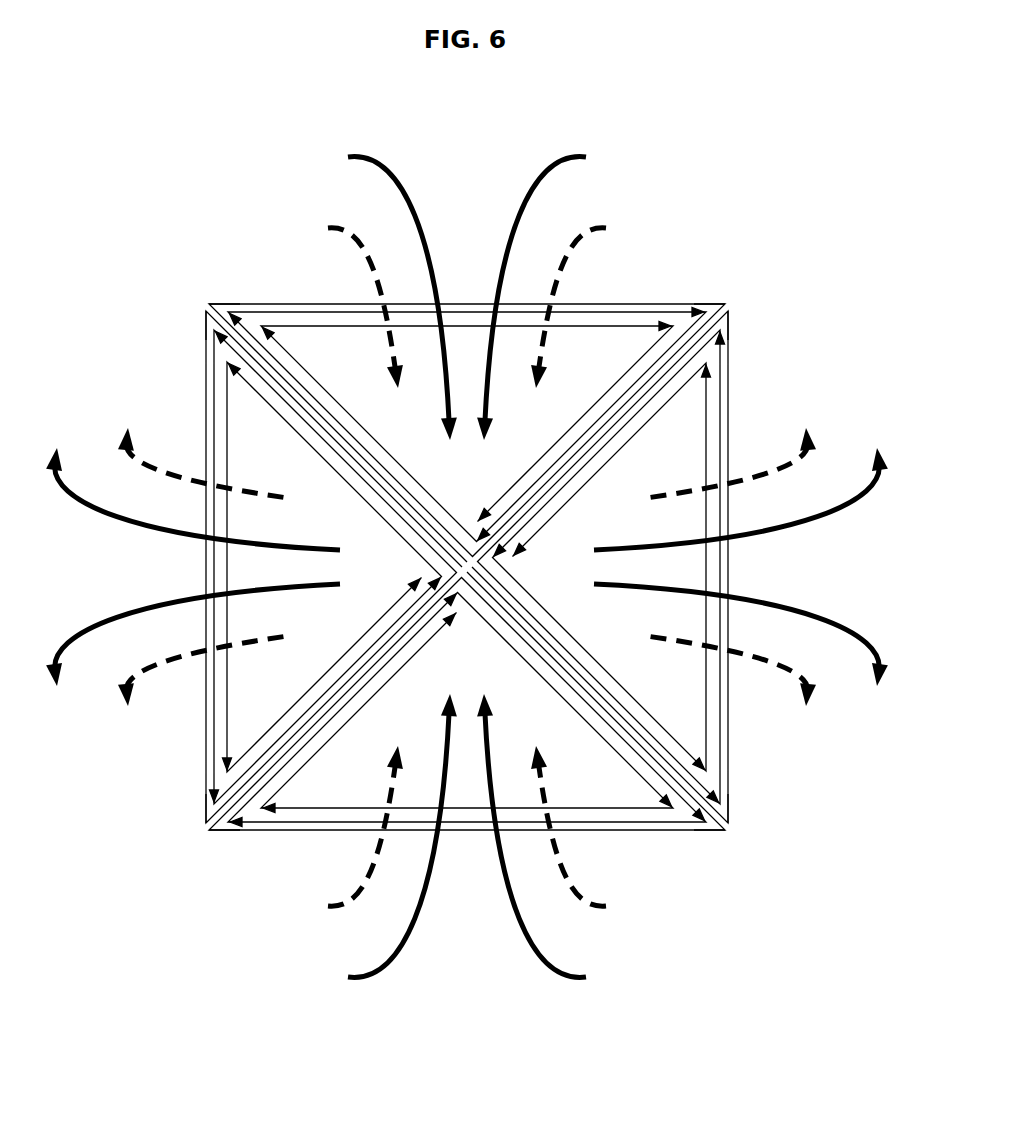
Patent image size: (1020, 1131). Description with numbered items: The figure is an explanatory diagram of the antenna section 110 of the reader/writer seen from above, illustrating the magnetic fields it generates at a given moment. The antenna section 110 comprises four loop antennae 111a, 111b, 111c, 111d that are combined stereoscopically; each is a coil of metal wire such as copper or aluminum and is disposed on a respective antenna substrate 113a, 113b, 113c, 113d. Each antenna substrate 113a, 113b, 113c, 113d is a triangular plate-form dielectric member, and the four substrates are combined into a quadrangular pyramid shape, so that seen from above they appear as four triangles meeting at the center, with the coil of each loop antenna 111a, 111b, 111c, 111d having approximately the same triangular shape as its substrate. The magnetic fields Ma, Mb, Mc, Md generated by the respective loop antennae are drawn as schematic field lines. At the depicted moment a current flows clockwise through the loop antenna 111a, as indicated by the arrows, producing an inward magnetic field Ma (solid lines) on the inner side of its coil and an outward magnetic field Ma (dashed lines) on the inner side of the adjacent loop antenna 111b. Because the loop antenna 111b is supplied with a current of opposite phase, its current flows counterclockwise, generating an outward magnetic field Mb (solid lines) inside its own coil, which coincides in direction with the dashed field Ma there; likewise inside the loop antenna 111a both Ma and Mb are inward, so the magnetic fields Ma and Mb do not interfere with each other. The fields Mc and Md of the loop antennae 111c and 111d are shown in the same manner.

The antenna section 110 is at (789, 191).
The loop antenna 111a is at (465, 302).
The loop antenna 111b is at (730, 566).
The loop antenna 111c is at (470, 833).
The loop antenna 111d is at (206, 568).
The antenna substrate 113a is at (223, 305).
The antenna substrate 113b is at (732, 325).
The antenna substrate 113c is at (712, 833).
The antenna substrate 113d is at (205, 822).
The magnetic field Ma is at (380, 170).
The magnetic field Mb is at (582, 242).
The magnetic field Mc is at (160, 676).
The magnetic field Md is at (352, 242).